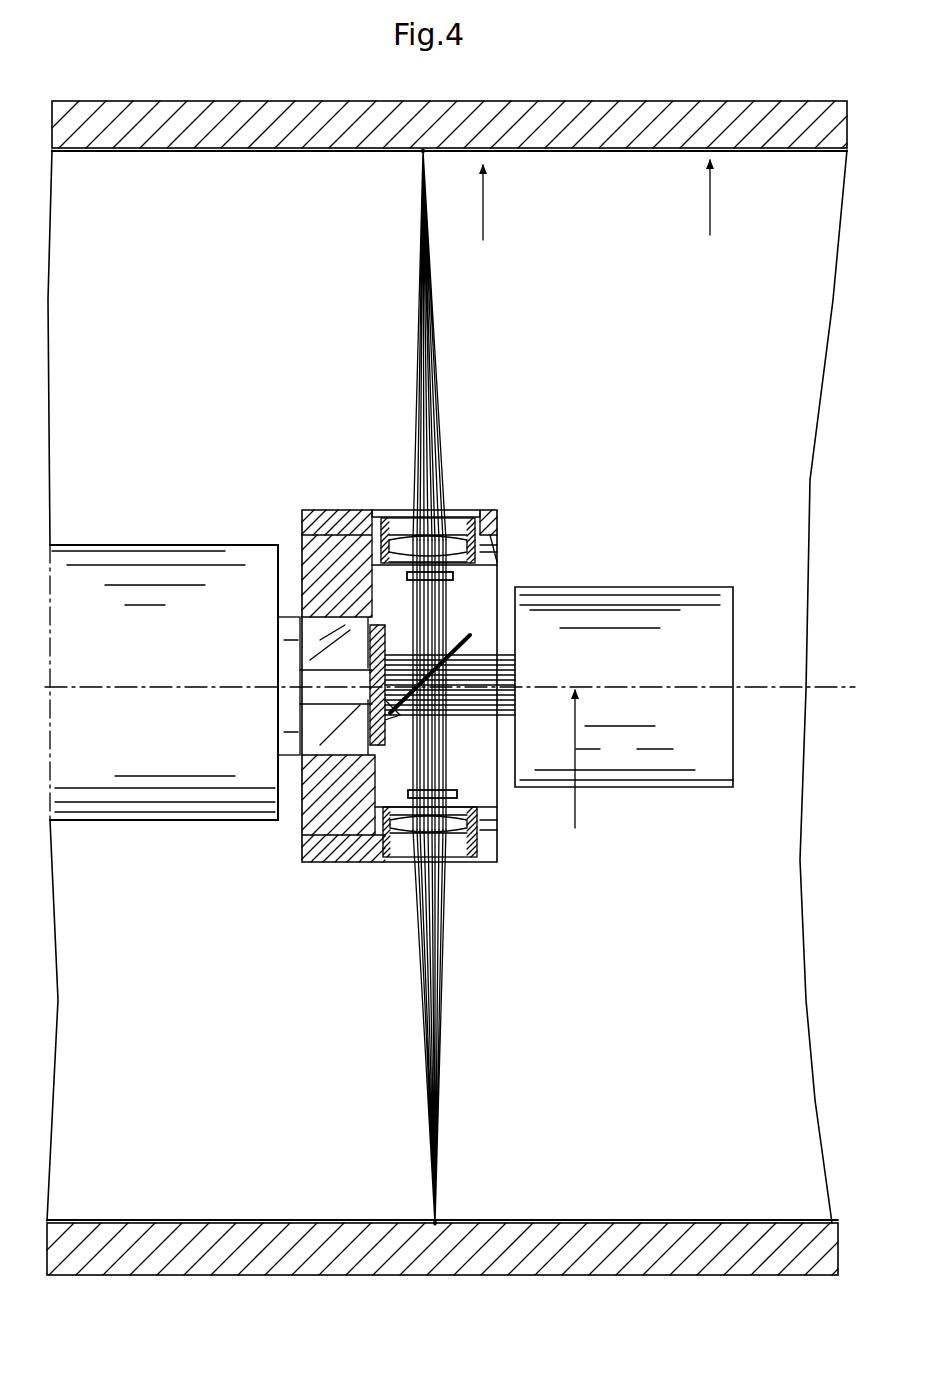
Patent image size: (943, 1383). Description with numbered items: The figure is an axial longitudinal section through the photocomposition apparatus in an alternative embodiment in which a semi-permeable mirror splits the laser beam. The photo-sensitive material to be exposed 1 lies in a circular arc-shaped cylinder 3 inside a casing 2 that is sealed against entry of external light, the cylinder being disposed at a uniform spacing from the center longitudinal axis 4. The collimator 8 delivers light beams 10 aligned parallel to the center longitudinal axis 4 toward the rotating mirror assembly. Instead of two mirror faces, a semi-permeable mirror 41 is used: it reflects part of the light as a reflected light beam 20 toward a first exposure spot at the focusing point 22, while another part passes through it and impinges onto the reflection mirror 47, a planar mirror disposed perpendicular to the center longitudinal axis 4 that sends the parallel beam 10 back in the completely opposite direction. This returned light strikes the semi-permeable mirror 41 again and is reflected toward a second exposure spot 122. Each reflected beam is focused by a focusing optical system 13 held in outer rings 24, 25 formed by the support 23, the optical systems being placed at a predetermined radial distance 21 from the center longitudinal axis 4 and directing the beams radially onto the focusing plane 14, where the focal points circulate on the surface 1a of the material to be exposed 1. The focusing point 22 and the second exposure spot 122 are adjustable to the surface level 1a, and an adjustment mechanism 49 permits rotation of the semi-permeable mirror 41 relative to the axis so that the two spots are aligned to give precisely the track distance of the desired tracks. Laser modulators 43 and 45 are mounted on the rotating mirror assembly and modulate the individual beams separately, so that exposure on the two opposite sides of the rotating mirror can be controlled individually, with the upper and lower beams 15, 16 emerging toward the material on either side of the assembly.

The material to be exposed 1 is at (189, 147).
The surface of the material to be exposed 1a is at (287, 153).
The casing 2 is at (645, 115).
The circular arc-shaped cylinder 3 is at (712, 221).
The center longitudinal axis 4 is at (835, 685).
The collimator 8 is at (696, 762).
The light beams 10 is at (516, 657).
The optical system 13 is at (452, 548).
The focusing plane 14 is at (520, 1224).
The upper measuring beam 15 is at (432, 365).
The lower measuring beam 16 is at (437, 1037).
The reflected light beam 20 is at (487, 578).
The radial distance 21 is at (606, 759).
The focusing point 22 is at (437, 1224).
The support 23 is at (305, 828).
The outer ring 24 is at (498, 517).
The outer ring 25 is at (498, 548).
The semi-permeable mirror 41 is at (497, 627).
The laser modulator 43 is at (404, 574).
The laser modulator 45 is at (457, 797).
The reflection mirror 47 is at (373, 745).
The adjustment mechanism 49 is at (393, 712).
The second exposure spot 122 is at (418, 154).